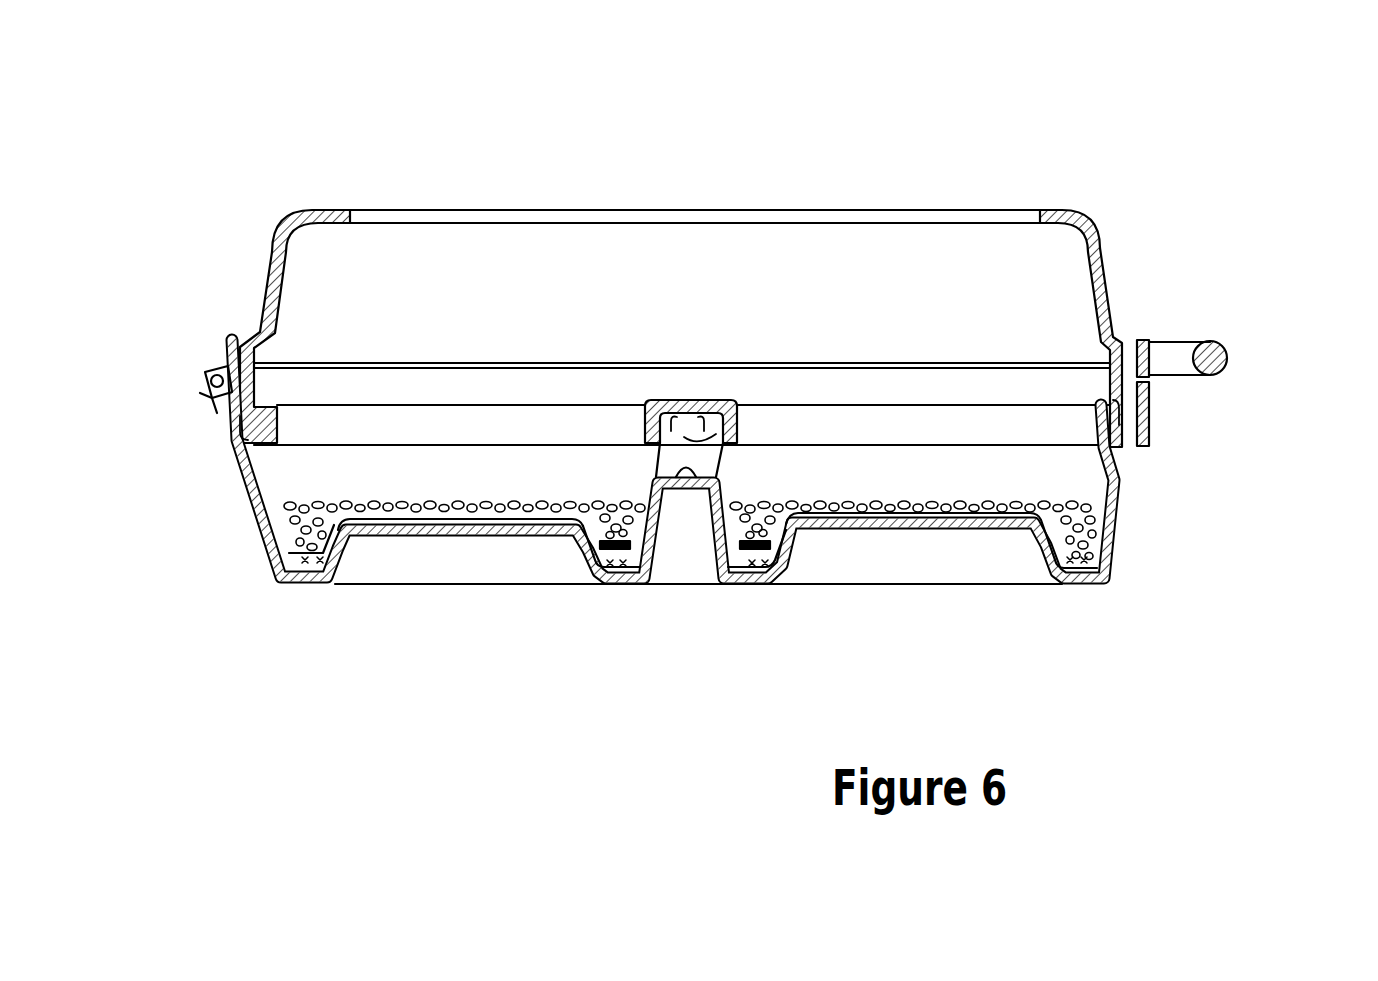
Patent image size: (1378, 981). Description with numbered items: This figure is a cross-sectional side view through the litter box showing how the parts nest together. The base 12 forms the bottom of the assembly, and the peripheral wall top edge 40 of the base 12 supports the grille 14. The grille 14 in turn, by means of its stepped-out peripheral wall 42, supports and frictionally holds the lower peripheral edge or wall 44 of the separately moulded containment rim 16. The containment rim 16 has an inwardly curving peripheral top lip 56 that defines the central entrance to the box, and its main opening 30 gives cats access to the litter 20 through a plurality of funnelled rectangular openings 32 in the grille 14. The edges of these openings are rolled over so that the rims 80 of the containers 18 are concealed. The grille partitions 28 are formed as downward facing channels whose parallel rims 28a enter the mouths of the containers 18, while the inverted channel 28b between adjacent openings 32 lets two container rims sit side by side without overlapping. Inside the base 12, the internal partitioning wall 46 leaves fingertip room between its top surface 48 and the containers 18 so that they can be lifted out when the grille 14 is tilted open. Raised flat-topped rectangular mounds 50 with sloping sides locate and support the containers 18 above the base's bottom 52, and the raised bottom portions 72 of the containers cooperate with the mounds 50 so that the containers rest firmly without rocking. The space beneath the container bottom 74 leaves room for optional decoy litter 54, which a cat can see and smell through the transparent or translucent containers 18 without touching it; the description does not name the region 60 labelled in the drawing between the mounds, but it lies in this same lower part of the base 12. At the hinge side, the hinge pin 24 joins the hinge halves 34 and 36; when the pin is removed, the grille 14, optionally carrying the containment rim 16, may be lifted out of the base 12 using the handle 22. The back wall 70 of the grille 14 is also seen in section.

The base 12 is at (1206, 499).
The grille 14 is at (1213, 300).
The containment rim 16 is at (1268, 204).
The containers 18 is at (648, 470).
The litter 20 is at (298, 490).
The handle 22 is at (1228, 357).
The hinge pin 24 is at (207, 380).
The grille partitions 28 is at (775, 412).
The grille partition rims 28a is at (643, 412).
The inverted channel 28b is at (777, 443).
The main opening 30 is at (959, 264).
The rectangular openings 32 is at (489, 444).
The hinge half 34 is at (217, 373).
The hinge half 36 is at (228, 387).
The peripheral wall top edge 40 is at (1150, 383).
The stepped-out peripheral wall 42 is at (240, 340).
The lower peripheral edge 44 is at (1113, 352).
The internal partitioning wall 46 is at (723, 565).
The top surface 48 is at (685, 470).
The raised mounds 50 is at (905, 530).
The base's bottom 52 is at (1060, 587).
The decoy litter 54 is at (765, 549).
The peripheral top lip 56 is at (320, 222).
The channel 60 is at (577, 527).
The back wall 70 is at (258, 333).
The raised bottom portions 72 is at (437, 538).
The container bottom 74 is at (323, 584).
The rims of the containers 80 is at (228, 442).